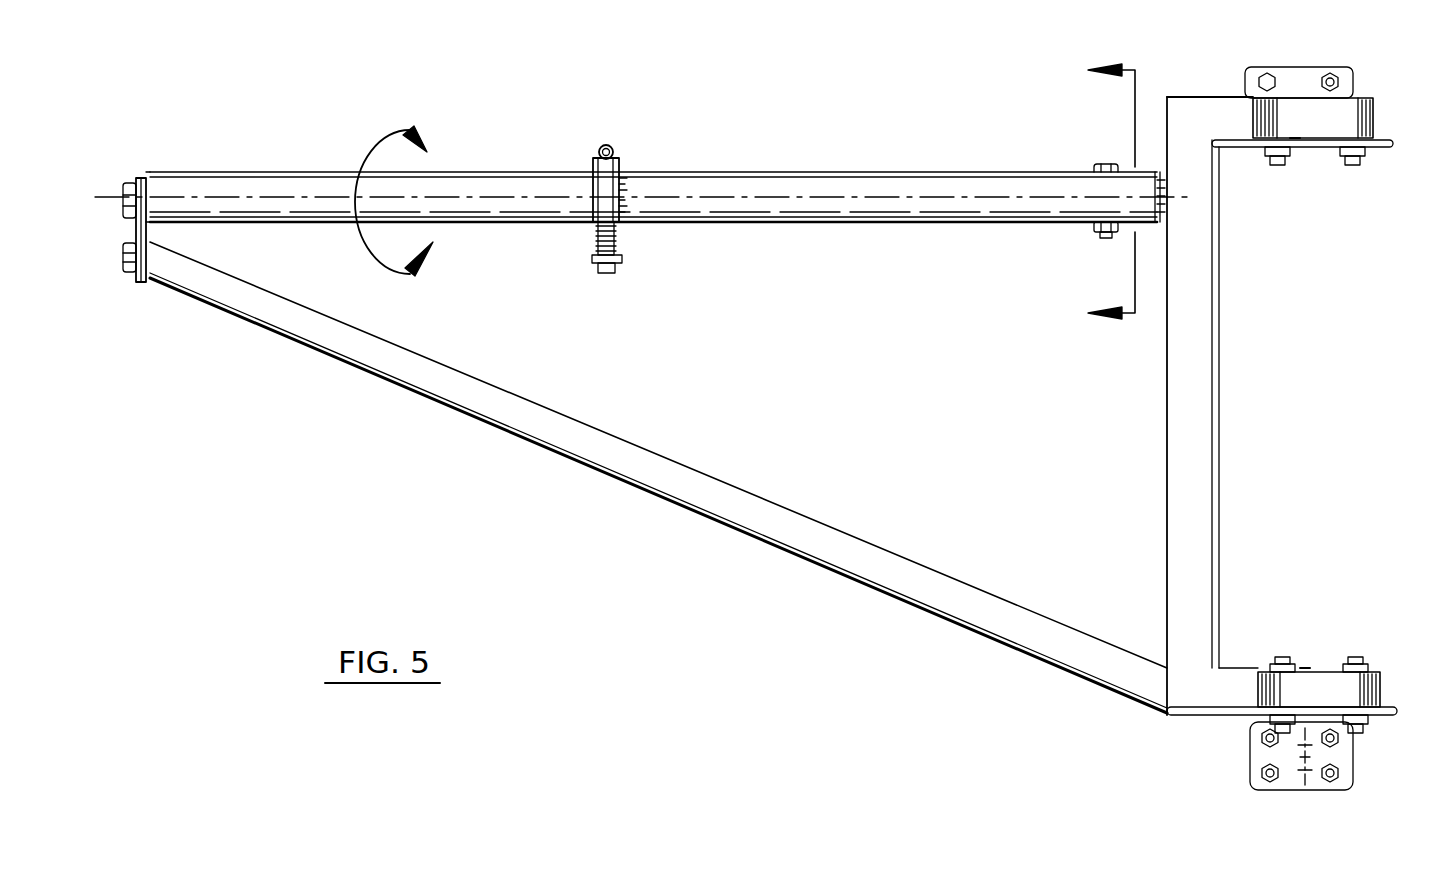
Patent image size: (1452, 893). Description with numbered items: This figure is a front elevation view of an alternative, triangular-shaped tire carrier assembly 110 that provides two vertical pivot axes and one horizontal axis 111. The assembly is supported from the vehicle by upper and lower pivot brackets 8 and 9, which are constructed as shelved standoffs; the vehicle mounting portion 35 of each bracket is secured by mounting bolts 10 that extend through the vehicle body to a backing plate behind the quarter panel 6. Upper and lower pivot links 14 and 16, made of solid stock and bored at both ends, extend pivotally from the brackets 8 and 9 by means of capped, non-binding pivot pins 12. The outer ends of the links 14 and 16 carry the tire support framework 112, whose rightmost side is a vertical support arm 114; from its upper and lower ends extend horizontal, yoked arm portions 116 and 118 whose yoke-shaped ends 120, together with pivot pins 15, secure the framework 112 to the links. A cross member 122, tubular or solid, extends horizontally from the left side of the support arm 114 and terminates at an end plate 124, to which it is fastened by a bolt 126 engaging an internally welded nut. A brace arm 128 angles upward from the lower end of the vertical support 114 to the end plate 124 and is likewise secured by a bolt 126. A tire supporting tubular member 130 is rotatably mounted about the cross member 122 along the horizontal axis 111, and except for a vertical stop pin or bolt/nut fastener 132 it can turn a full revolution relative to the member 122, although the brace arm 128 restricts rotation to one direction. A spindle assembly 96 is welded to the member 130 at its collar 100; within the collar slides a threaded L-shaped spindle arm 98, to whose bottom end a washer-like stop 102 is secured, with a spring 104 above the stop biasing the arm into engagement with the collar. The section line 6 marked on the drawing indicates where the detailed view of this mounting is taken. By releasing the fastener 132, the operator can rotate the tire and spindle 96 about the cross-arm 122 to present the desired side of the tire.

The quarter panel 6 is at (1111, 194).
The upper pivot bracket 8 is at (1320, 50).
The lower pivot bracket 9 is at (1345, 805).
The mounting bolts 10 is at (1262, 80).
The capped pivot pins 12 is at (1357, 165).
The upper pivot link 14 is at (1345, 120).
The capped pivot pins 15 is at (1275, 165).
The lower pivot link 16 is at (1360, 690).
The vehicle mounting portion 35 is at (1272, 68).
The spindle assembly 96 is at (601, 193).
The spindle arm 98 is at (600, 148).
The collar 100 is at (600, 190).
The stop 102 is at (625, 258).
The spring 104 is at (597, 242).
The triangular-shaped assembly 110 is at (615, 547).
The horizontal axis 111 is at (243, 198).
The tire support framework 112 is at (1226, 406).
The vertical support arm 114 is at (1175, 370).
The upper yoked arm portion 116 is at (1223, 131).
The lower yoked arm portion 118 is at (1221, 703).
The yoke-shaped ends 120 is at (1295, 140).
The member 122 is at (1152, 172).
The end plate 124 is at (136, 238).
The bolt 126 is at (125, 192).
The brace arm 128 is at (815, 525).
The tire supporting tubular member 130 is at (404, 201).
The stop pin 132 is at (1105, 238).